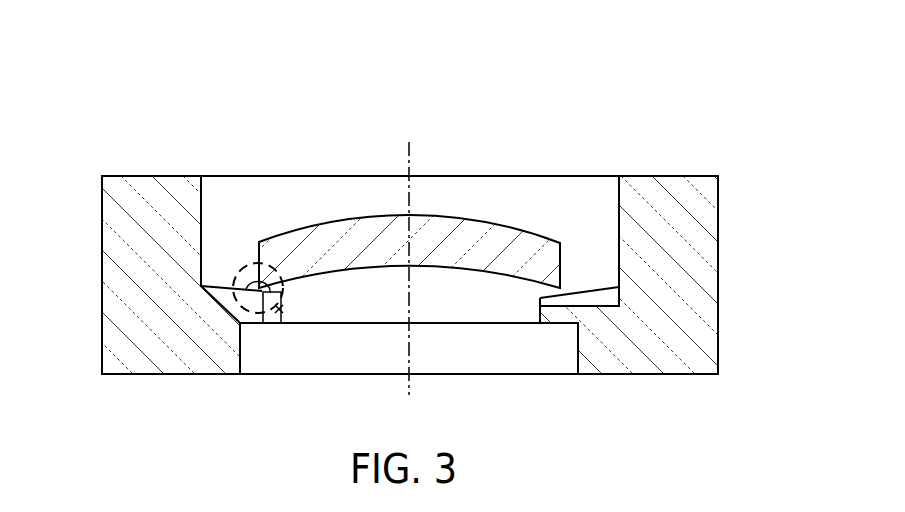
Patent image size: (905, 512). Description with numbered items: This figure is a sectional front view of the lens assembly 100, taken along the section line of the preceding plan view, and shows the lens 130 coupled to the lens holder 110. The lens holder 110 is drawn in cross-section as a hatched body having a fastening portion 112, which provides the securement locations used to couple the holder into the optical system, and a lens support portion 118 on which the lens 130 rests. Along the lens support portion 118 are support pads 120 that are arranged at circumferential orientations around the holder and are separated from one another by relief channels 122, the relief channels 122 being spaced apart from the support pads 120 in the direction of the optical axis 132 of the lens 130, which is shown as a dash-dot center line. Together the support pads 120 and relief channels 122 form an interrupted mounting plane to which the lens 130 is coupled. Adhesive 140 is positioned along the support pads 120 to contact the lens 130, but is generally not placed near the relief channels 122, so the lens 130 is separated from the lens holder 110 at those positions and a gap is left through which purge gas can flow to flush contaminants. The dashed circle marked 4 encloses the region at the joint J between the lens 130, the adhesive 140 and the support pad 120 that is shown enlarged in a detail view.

The lens assembly 100 is at (667, 88).
The lens holder 110 is at (138, 143).
The fastening portion 112 is at (667, 176).
The lens support portion 118 is at (218, 285).
The support pads 120 is at (281, 308).
The relief channels 122 is at (588, 287).
The lens 130 is at (414, 209).
The optical axis 132 is at (409, 150).
The adhesive 140 is at (260, 294).
The detail region of FIG. 4 is at (284, 286).
The joint J is at (274, 312).